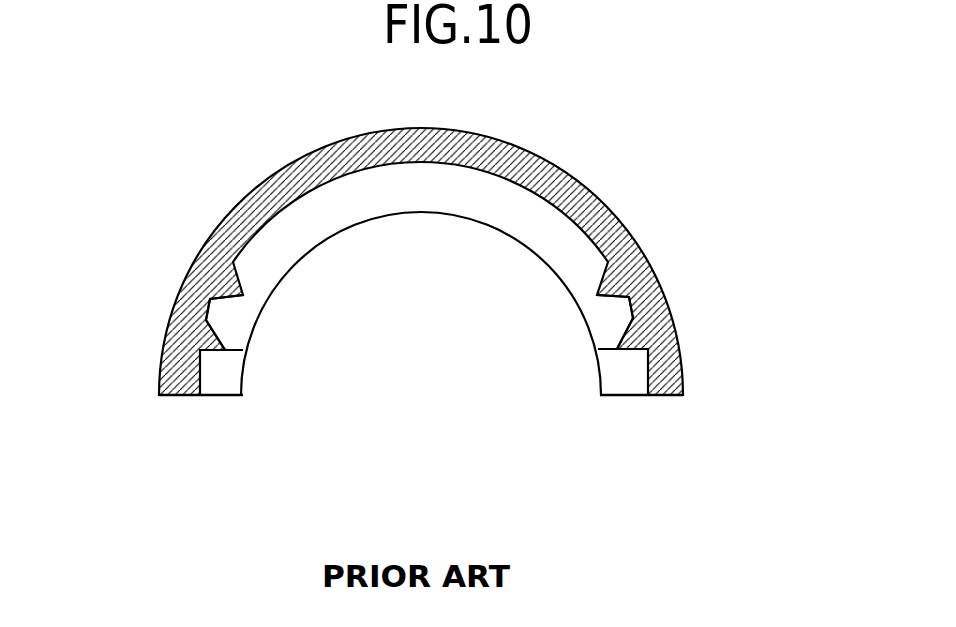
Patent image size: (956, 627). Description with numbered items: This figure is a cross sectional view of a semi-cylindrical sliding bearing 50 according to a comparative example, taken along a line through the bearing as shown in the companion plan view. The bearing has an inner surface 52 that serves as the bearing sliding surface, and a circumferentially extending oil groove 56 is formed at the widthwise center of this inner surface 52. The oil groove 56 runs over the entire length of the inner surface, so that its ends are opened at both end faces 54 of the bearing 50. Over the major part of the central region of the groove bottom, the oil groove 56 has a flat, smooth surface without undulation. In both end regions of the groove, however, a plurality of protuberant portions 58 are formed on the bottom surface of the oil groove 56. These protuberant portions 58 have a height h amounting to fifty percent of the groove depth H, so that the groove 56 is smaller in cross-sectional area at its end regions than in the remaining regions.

The sliding bearing 50 is at (700, 142).
The inner surface 52 is at (252, 368).
The end faces 54 is at (226, 397).
The oil groove 56 is at (422, 195).
The protuberant portions 58 is at (614, 345).
The groove depth H is at (325, 317).
The height of protuberant portions h is at (298, 327).